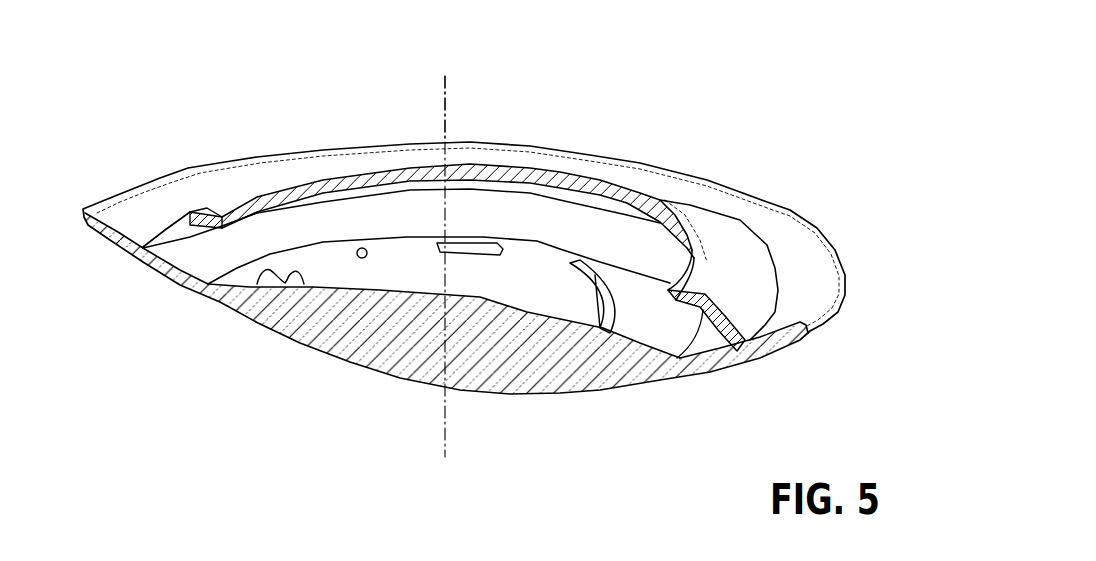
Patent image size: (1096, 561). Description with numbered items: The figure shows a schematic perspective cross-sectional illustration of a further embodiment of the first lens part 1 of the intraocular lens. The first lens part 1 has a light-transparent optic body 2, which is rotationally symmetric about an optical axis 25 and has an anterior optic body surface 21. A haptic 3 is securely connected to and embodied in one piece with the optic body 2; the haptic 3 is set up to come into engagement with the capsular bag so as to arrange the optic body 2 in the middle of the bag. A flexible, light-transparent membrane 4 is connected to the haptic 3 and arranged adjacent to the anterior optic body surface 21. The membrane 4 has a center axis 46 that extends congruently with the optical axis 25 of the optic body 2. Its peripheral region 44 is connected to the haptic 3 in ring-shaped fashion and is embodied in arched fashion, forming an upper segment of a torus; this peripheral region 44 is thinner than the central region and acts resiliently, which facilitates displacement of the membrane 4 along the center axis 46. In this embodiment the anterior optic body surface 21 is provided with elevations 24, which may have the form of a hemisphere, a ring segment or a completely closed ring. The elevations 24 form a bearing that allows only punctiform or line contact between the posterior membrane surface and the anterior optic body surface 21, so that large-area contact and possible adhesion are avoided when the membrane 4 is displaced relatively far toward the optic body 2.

The first lens part 1 is at (464, 197).
The optic body 2 is at (446, 311).
The haptic 3 is at (446, 330).
The flexible membrane 4 is at (460, 229).
The anterior optic body surface 21 is at (439, 194).
The elevations 24 is at (478, 236).
The optical axis 25 is at (478, 102).
The peripheral region 44 is at (525, 208).
The center axis 46 is at (413, 254).